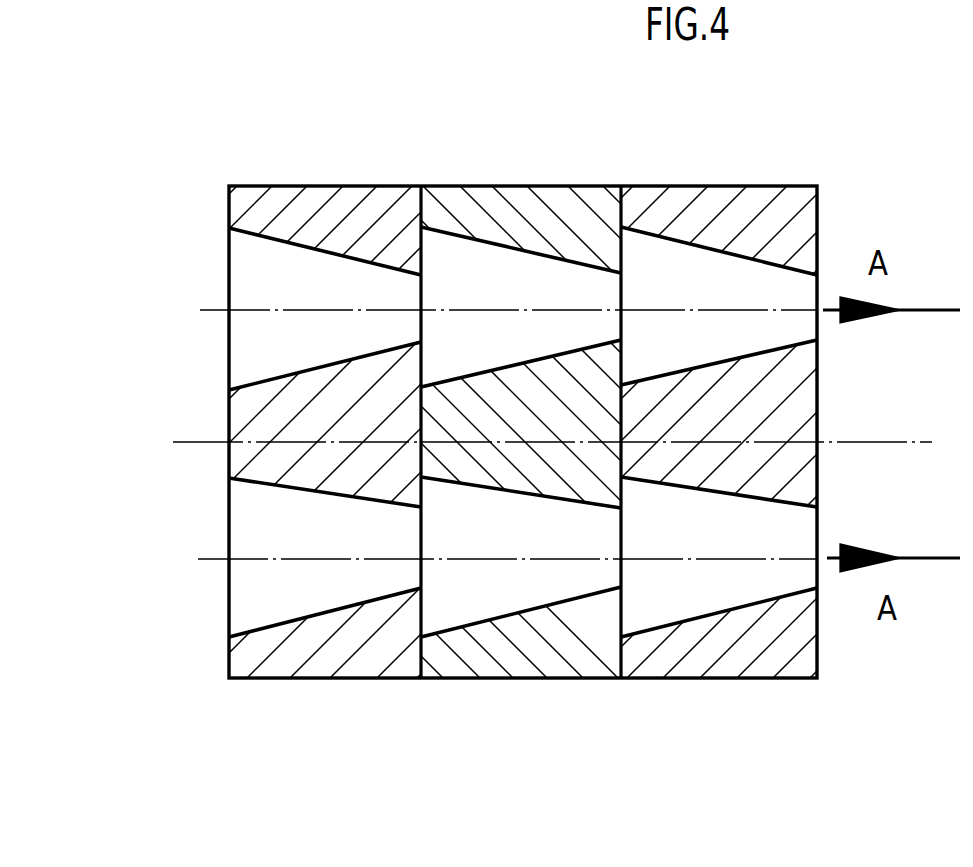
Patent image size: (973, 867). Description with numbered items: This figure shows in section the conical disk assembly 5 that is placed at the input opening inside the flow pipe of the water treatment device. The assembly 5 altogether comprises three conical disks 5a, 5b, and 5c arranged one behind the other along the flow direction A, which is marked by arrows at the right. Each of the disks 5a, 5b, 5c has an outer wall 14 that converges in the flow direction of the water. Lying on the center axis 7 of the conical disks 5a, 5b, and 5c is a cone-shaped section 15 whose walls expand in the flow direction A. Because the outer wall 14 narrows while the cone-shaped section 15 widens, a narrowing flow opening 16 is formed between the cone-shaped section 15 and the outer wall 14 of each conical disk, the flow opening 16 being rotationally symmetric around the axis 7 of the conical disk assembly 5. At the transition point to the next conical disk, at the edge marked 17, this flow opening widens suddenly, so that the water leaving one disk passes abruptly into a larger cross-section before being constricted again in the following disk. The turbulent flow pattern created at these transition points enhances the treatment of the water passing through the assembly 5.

The conical disk assembly 5 is at (792, 716).
The first conical disk 5a is at (454, 490).
The second conical disk 5b is at (486, 453).
The third conical disk 5c is at (733, 650).
The center axis 7 is at (890, 441).
The outer wall 14 is at (267, 650).
The cone-shaped section 15 is at (240, 461).
The flow opening 16 is at (248, 587).
The channel edge 17 is at (425, 251).